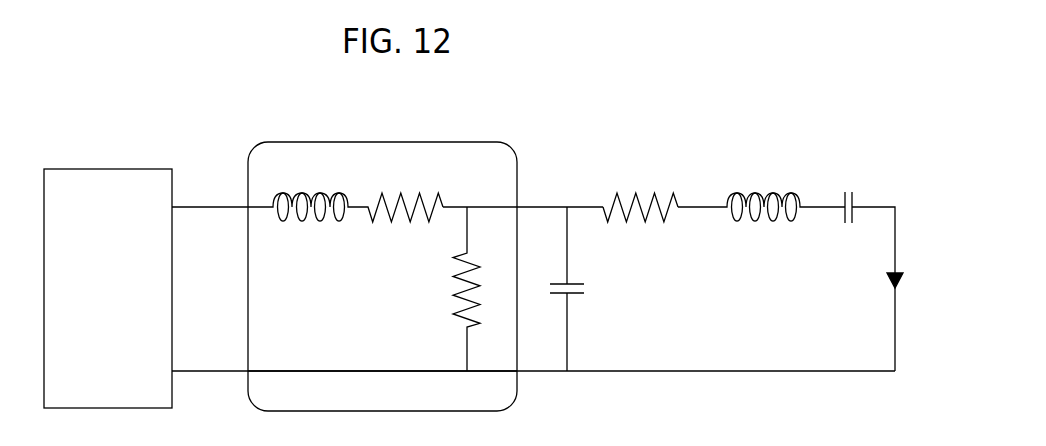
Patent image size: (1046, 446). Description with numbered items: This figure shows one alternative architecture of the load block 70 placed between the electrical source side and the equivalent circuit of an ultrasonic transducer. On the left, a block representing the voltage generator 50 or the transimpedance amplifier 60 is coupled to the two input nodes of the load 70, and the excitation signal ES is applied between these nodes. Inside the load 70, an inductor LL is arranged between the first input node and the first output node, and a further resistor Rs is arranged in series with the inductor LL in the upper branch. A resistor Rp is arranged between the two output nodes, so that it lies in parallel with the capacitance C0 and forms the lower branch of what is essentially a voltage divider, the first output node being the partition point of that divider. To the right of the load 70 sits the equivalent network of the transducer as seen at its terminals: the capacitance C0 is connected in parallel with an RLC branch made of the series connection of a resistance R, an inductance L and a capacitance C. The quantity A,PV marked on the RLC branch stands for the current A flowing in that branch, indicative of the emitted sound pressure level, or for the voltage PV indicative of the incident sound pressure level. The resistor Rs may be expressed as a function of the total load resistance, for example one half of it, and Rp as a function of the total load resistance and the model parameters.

The voltage generator 50 is at (108, 259).
The transimpedance amplifier 60 is at (102, 188).
The load block 70 is at (332, 155).
The excitation signal ES is at (198, 222).
The inductor LL is at (318, 218).
The further resistor Rs is at (397, 188).
The resistor Rp is at (452, 289).
The capacitance C0 is at (573, 294).
The resistance R is at (630, 195).
The inductance L is at (730, 196).
The capacitance C is at (854, 198).
The current flow and pressure voltage A,PV is at (922, 291).